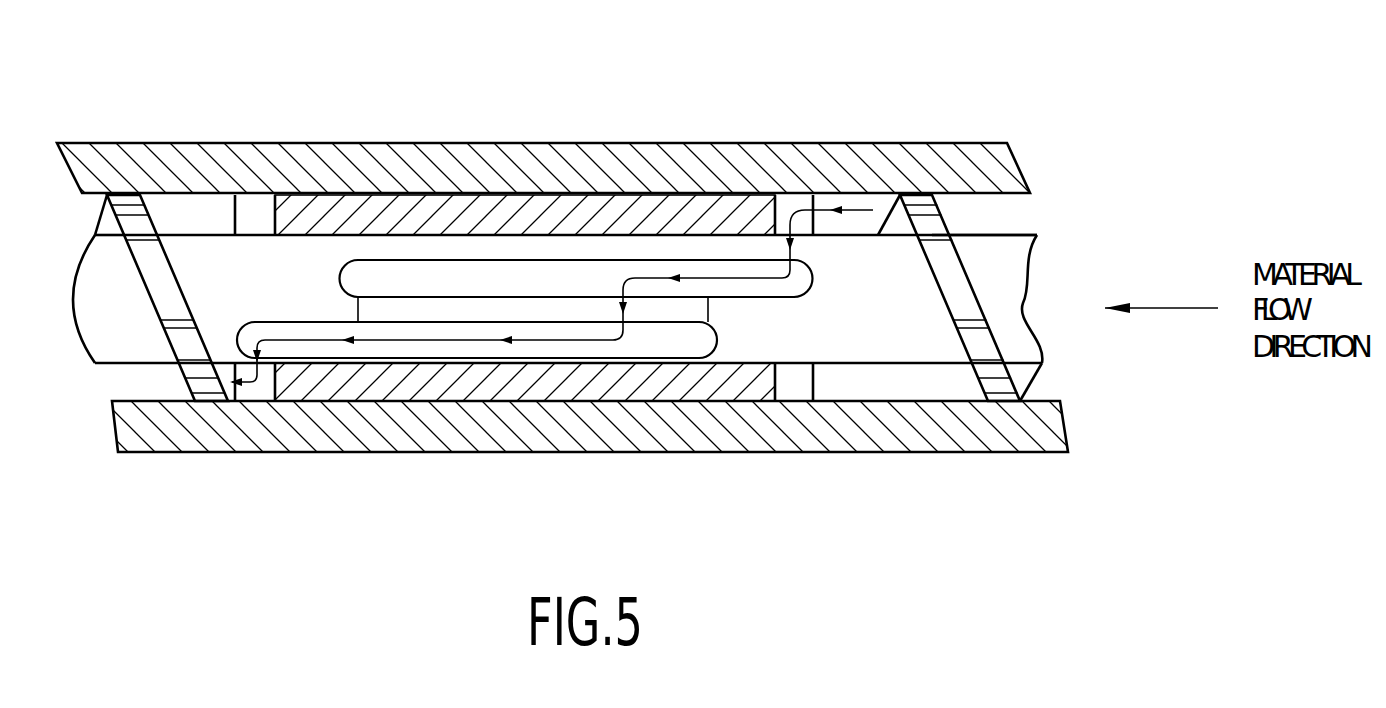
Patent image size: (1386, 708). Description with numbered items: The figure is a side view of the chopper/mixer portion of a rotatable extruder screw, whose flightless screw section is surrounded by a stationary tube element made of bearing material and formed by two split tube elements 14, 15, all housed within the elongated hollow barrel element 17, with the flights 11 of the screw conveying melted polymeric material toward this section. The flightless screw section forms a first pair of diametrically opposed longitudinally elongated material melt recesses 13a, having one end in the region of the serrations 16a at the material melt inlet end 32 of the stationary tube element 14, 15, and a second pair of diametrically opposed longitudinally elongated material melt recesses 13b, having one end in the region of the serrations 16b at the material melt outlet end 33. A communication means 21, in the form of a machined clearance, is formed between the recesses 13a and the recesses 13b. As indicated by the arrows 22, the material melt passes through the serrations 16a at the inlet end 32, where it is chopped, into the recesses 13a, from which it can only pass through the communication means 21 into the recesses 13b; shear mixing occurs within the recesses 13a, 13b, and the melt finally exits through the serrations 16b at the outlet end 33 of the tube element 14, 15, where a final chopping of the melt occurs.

The flights 11 is at (943, 212).
The first pair of diametrically opposed longitudinally elongated material melt reces 13a is at (800, 282).
The second pair of diametrically opposed longitudinally elongated material melt rece 13b is at (263, 332).
The split tube element 14 is at (468, 202).
The split tube element 15 is at (688, 393).
The serrations at material melt inlet end 16a is at (783, 202).
The serrations at material melt outlet end 16b is at (250, 212).
The elongated hollow barrel element 17 is at (702, 143).
The communication means 21 is at (478, 312).
The arrows 22 is at (825, 202).
The material melt inlet end 32 is at (795, 387).
The material melt outlet end 33 is at (272, 404).